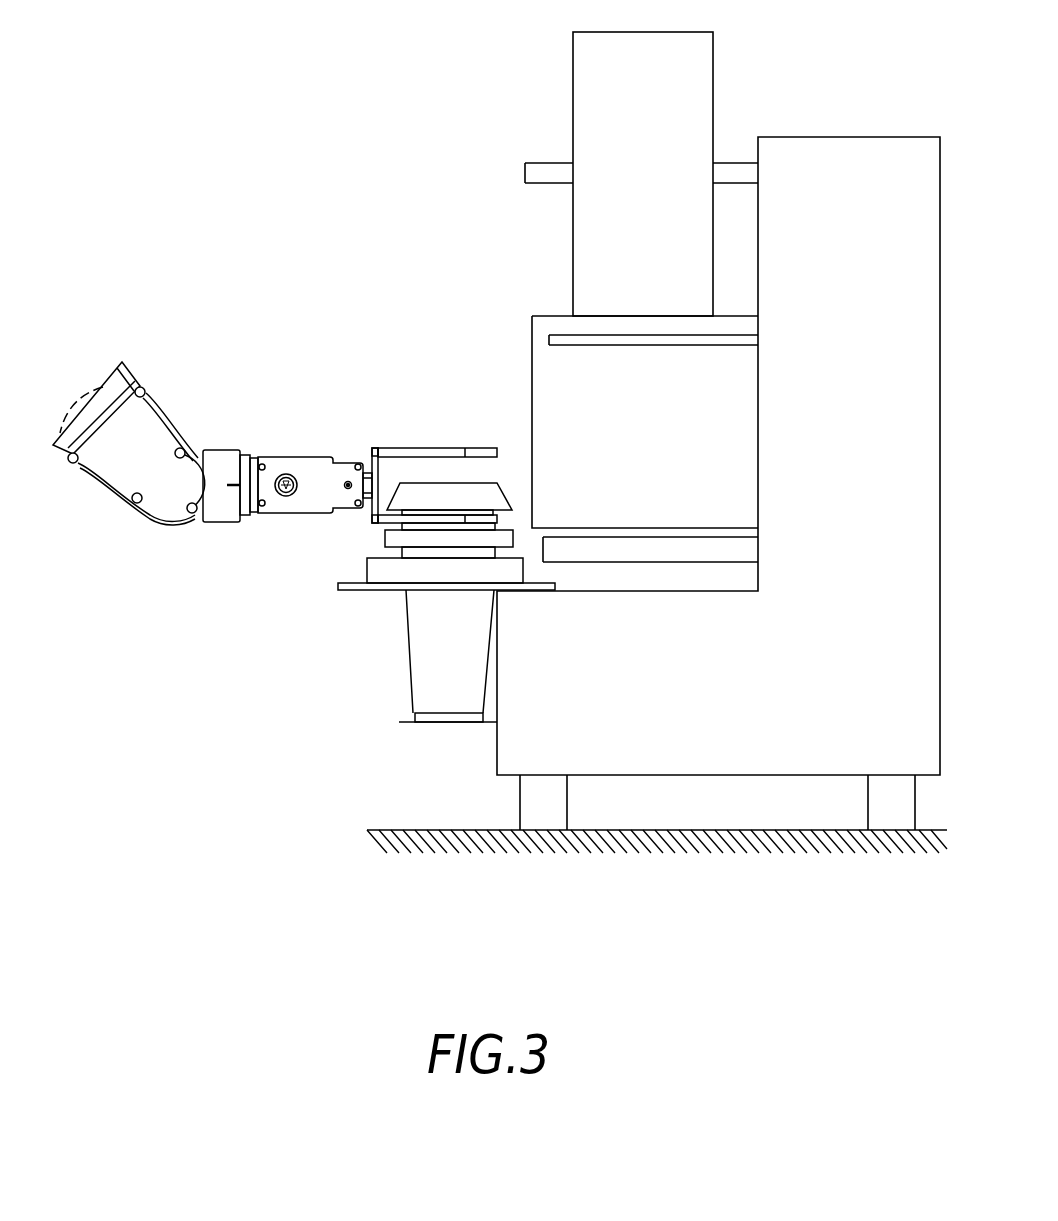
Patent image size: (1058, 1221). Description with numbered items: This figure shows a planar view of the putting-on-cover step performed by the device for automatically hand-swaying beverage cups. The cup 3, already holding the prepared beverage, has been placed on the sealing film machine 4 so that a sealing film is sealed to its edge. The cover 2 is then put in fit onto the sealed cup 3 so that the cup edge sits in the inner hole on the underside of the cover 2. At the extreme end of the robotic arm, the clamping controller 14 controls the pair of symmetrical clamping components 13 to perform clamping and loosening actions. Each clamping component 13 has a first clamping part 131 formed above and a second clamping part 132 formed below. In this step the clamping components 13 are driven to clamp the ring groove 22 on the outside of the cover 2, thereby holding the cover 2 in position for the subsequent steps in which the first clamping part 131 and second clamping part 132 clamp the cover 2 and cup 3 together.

The cover 2 is at (411, 601).
The ring groove 22 is at (427, 547).
The cup 3 is at (408, 685).
The sealing film machine 4 is at (672, 775).
The clamping component 13 is at (417, 392).
The first clamping part 131 is at (402, 452).
The second clamping part 132 is at (482, 520).
The clamping controller 14 is at (302, 508).